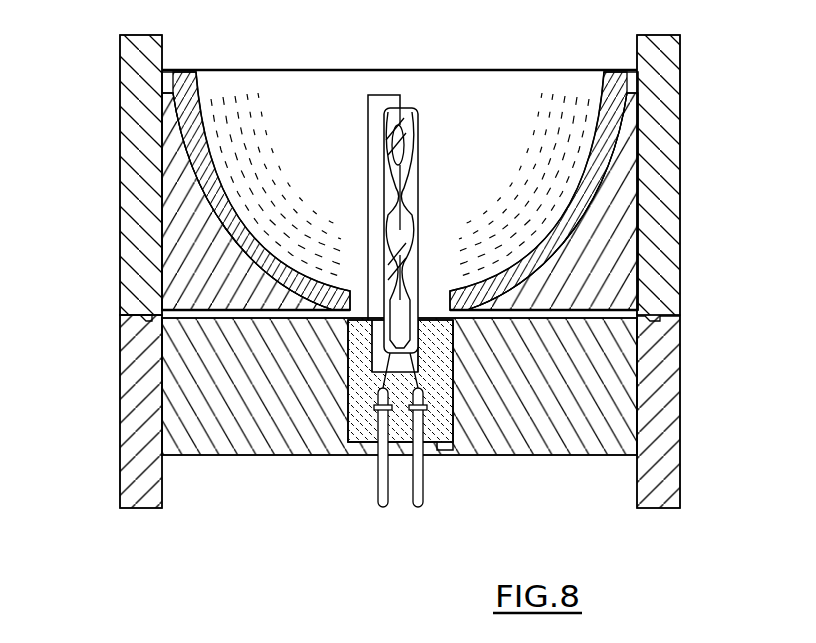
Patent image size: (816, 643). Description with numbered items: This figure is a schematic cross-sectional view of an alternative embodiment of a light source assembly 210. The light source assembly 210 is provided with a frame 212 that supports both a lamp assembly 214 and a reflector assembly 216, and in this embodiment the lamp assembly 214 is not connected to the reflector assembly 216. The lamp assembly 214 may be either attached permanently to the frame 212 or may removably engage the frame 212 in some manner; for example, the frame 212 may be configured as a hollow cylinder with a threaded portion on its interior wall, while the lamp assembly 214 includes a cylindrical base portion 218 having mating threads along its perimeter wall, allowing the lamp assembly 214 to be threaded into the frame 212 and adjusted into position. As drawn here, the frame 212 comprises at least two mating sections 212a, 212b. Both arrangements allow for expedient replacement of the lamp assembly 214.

The light source assembly 210 is at (584, 501).
The frame 212 is at (676, 240).
The mating section 212a is at (136, 285).
The mating section 212b is at (130, 352).
The lamp assembly 214 is at (512, 450).
The reflector assembly 216 is at (178, 208).
The cylindrical base portion 218 is at (283, 450).